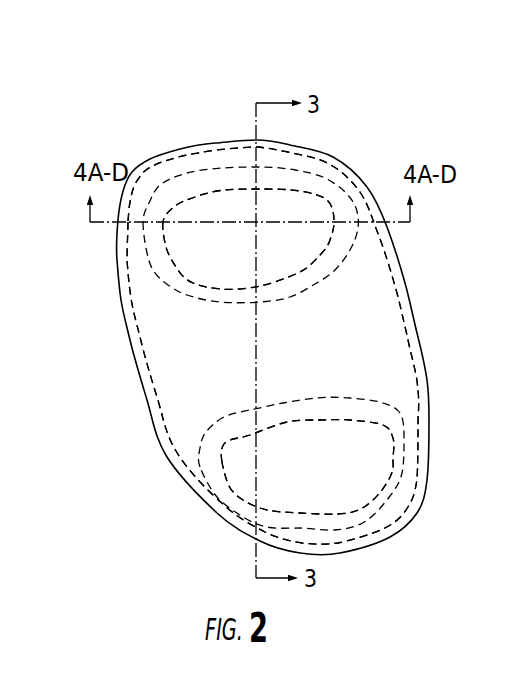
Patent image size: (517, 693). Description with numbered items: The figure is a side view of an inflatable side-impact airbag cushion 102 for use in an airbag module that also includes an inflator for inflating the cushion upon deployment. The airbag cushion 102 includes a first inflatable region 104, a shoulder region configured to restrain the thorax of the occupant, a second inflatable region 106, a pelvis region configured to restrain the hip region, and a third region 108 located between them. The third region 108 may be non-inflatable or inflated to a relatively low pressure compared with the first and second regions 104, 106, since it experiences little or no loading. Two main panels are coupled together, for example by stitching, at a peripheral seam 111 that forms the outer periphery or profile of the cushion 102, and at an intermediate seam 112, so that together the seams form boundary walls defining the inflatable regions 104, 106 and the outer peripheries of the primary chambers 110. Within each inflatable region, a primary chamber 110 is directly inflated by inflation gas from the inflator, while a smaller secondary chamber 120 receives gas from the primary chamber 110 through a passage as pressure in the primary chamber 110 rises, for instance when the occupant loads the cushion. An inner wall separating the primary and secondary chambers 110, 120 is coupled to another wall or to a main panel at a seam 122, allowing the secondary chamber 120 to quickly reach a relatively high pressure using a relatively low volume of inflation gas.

The airbag cushion 102 is at (118, 125).
The first inflatable region 104 is at (150, 300).
The second inflatable region 106 is at (198, 427).
The third region 108 is at (178, 357).
The primary chamber 110 is at (345, 243).
The peripheral seam 111 is at (170, 166).
The intermediate seam 112 is at (280, 310).
The secondary chamber 120 is at (300, 243).
The seam 122 is at (280, 278).